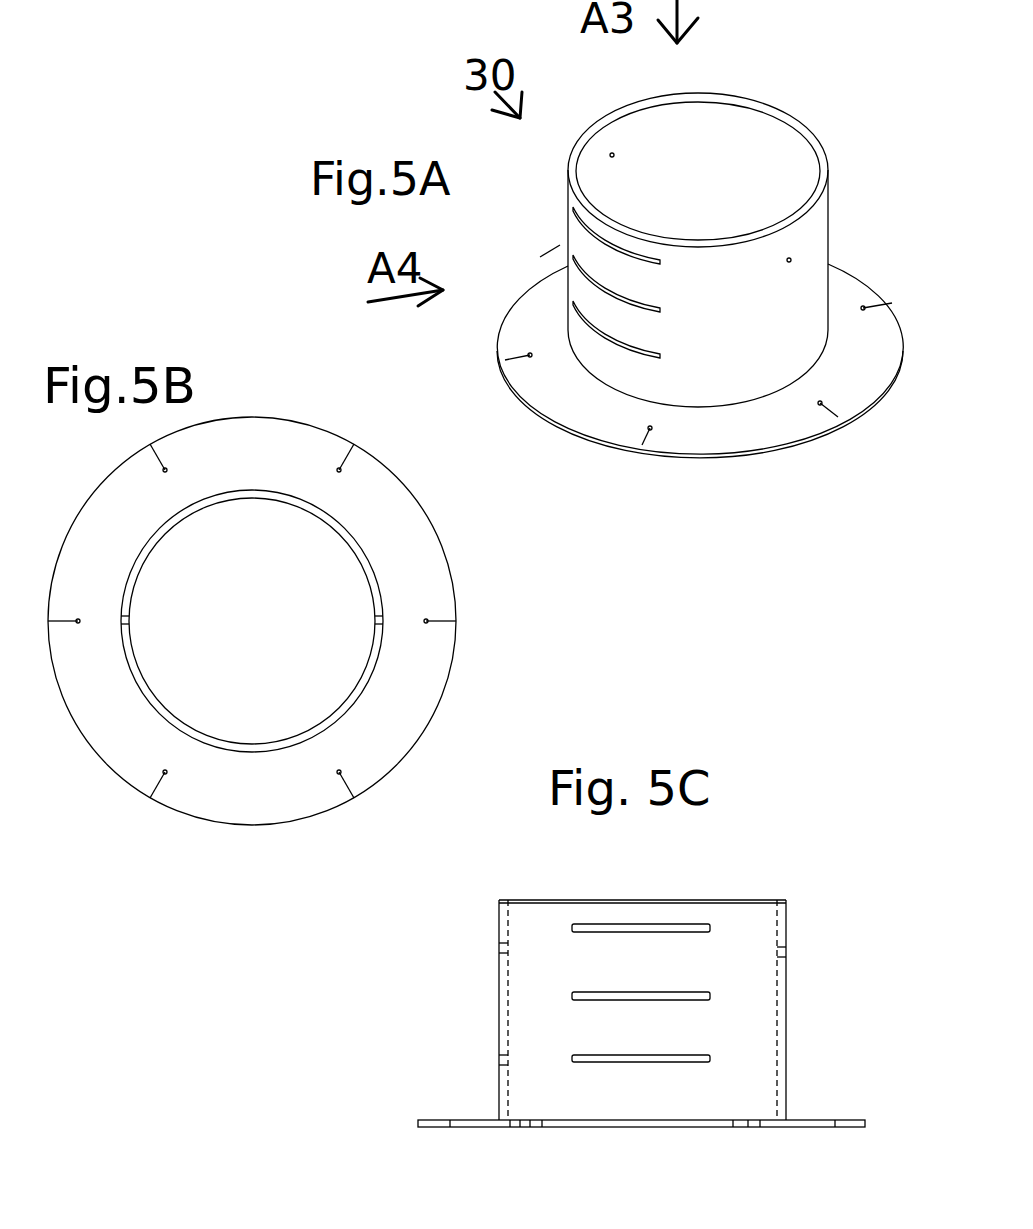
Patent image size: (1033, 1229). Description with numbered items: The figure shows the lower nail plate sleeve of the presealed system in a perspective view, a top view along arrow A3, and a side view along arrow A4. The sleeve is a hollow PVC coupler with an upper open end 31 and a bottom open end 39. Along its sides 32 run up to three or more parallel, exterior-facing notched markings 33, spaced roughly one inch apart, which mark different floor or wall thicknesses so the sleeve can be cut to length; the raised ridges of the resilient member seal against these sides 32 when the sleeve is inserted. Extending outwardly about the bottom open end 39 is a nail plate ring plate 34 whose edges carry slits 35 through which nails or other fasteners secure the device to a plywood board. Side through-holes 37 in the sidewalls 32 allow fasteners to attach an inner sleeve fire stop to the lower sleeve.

In FIG. 5A, the upper open end 31 is at (735, 107).
In FIG. 5C, the upper open end 31 is at (770, 905).
In FIG. 5A, the sides 32 is at (810, 240).
In FIG. 5B, the sides 32 is at (362, 552).
In FIG. 5C, the sides 32 is at (498, 993).
In FIG. 5A, the notched markings 33 is at (660, 261).
In FIG. 5C, the notched markings 33 is at (637, 933).
In FIG. 5A, the nail plate ring plate 34 is at (693, 427).
In FIG. 5B, the nail plate ring plate 34 is at (415, 569).
In FIG. 5C, the nail plate ring plate 34 is at (435, 1118).
In FIG. 5A, the slits 35 is at (647, 430).
In FIG. 5B, the slits 35 is at (338, 783).
In FIG. 5C, the slits 35 is at (448, 1125).
In FIG. 5A, the side through-holes 37 is at (788, 257).
In FIG. 5B, the side through-holes 37 is at (382, 626).
In FIG. 5C, the side through-holes 37 is at (642, 1004).
In FIG. 5C, the bottom open end 39 is at (517, 1130).